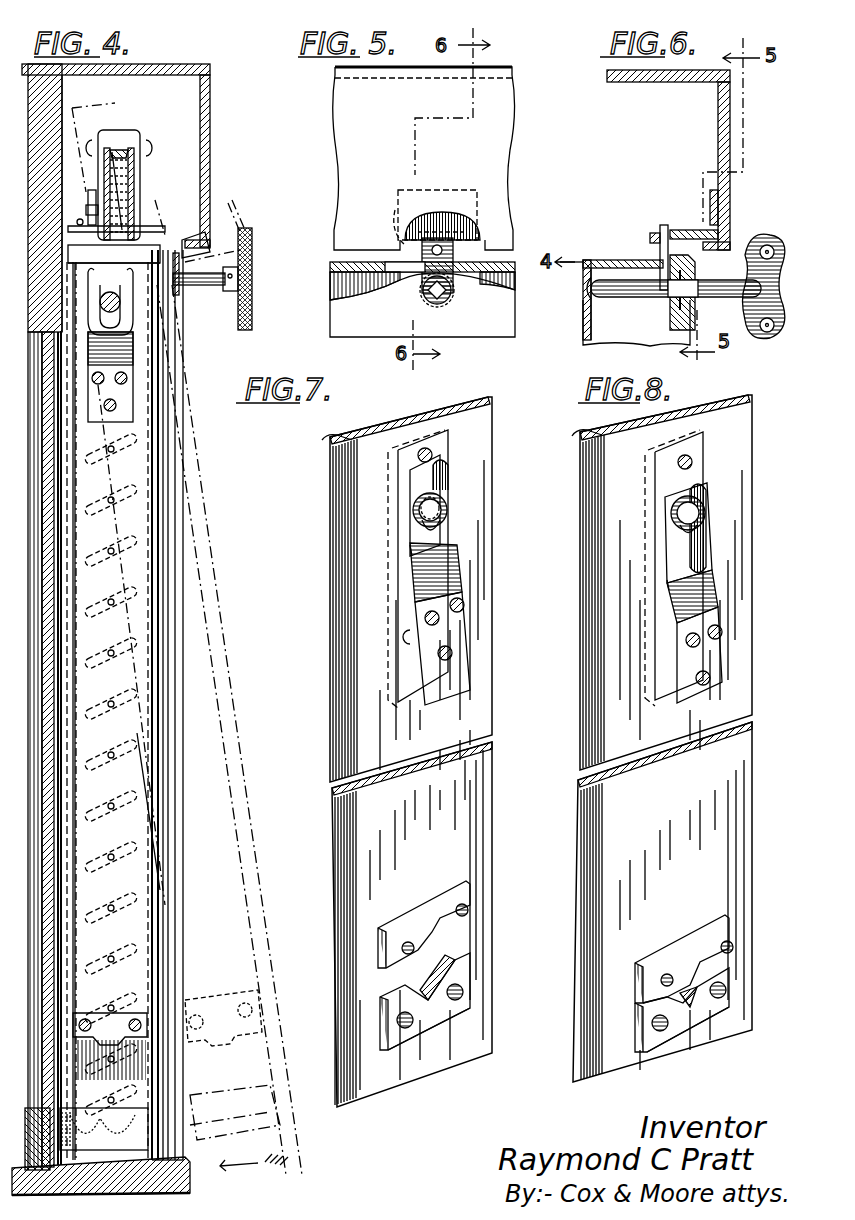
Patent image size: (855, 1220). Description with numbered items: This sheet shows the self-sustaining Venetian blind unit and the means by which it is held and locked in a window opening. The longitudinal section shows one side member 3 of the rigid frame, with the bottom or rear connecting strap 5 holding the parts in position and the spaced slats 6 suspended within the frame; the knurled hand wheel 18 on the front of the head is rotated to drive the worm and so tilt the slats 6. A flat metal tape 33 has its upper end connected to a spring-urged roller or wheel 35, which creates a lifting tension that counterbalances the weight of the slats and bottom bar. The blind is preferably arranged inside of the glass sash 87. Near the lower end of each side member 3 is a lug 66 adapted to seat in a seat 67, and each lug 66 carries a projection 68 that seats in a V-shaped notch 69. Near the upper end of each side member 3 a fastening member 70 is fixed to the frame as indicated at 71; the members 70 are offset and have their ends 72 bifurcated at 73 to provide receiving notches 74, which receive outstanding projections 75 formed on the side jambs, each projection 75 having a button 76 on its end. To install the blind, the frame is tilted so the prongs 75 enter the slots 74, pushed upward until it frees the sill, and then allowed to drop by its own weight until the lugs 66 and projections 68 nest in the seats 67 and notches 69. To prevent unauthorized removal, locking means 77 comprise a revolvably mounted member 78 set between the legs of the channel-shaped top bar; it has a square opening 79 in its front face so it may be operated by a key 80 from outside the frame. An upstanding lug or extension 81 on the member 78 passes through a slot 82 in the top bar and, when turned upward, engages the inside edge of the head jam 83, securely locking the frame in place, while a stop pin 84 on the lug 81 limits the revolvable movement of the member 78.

In FIG. 5, the side member 3 is at (424, 158).
In FIG. 7, the side member 3 is at (333, 465).
In FIG. 8, the side member 3 is at (725, 790).
In FIG. 4, the bottom or rear connecting strap 5 is at (110, 1140).
In FIG. 4, the slats 6 is at (113, 950).
In FIG. 4, the knurled hand wheel 18 is at (252, 238).
In FIG. 4, the flat metal tape 33 is at (120, 156).
In FIG. 4, the roller or wheel 35 is at (128, 195).
In FIG. 4, the lug 66 is at (216, 1000).
In FIG. 7, the lug 66 is at (433, 905).
In FIG. 8, the lug 66 is at (694, 935).
In FIG. 7, the seat 67 is at (465, 970).
In FIG. 8, the seat 67 is at (725, 978).
In FIG. 4, the projection 68 is at (97, 1015).
In FIG. 7, the projection 68 is at (430, 982).
In FIG. 8, the projection 68 is at (684, 995).
In FIG. 7, the V-shaped notch 69 is at (420, 1010).
In FIG. 8, the V-shaped notch 69 is at (675, 1020).
In FIG. 4, the fastening member 70 is at (125, 347).
In FIG. 7, the fastening member 70 is at (412, 565).
In FIG. 8, the fastening member 70 is at (700, 595).
In FIG. 4, the fastening 71 is at (120, 408).
In FIG. 7, the fastening 71 is at (463, 603).
In FIG. 8, the fastening 71 is at (722, 632).
In FIG. 7, the end 72 is at (450, 470).
In FIG. 8, the end 72 is at (708, 486).
In FIG. 7, the bifurcation 73 is at (415, 492).
In FIG. 8, the bifurcation 73 is at (672, 505).
In FIG. 7, the receiving notch 74 is at (412, 548).
In FIG. 8, the receiving notch 74 is at (672, 552).
In FIG. 7, the projection 75 is at (420, 505).
In FIG. 4, the button 76 is at (112, 290).
In FIG. 7, the button 76 is at (420, 522).
In FIG. 8, the button 76 is at (680, 522).
In FIG. 5, the locking means 77 is at (464, 252).
In FIG. 5, the revolvably mounted member 78 is at (450, 298).
In FIG. 6, the revolvably mounted member 78 is at (632, 292).
In FIG. 5, the square opening 79 is at (432, 294).
In FIG. 6, the key 80 is at (768, 237).
In FIG. 5, the upstanding lug or extension 81 is at (445, 235).
In FIG. 6, the upstanding lug or extension 81 is at (664, 225).
In FIG. 5, the slot 82 is at (394, 254).
In FIG. 6, the slot 82 is at (652, 258).
In FIG. 6, the head jam 83 is at (685, 230).
In FIG. 5, the stop pin 84 is at (395, 210).
In FIG. 6, the stop pin 84 is at (650, 235).
In FIG. 4, the glass sash 87 is at (45, 530).